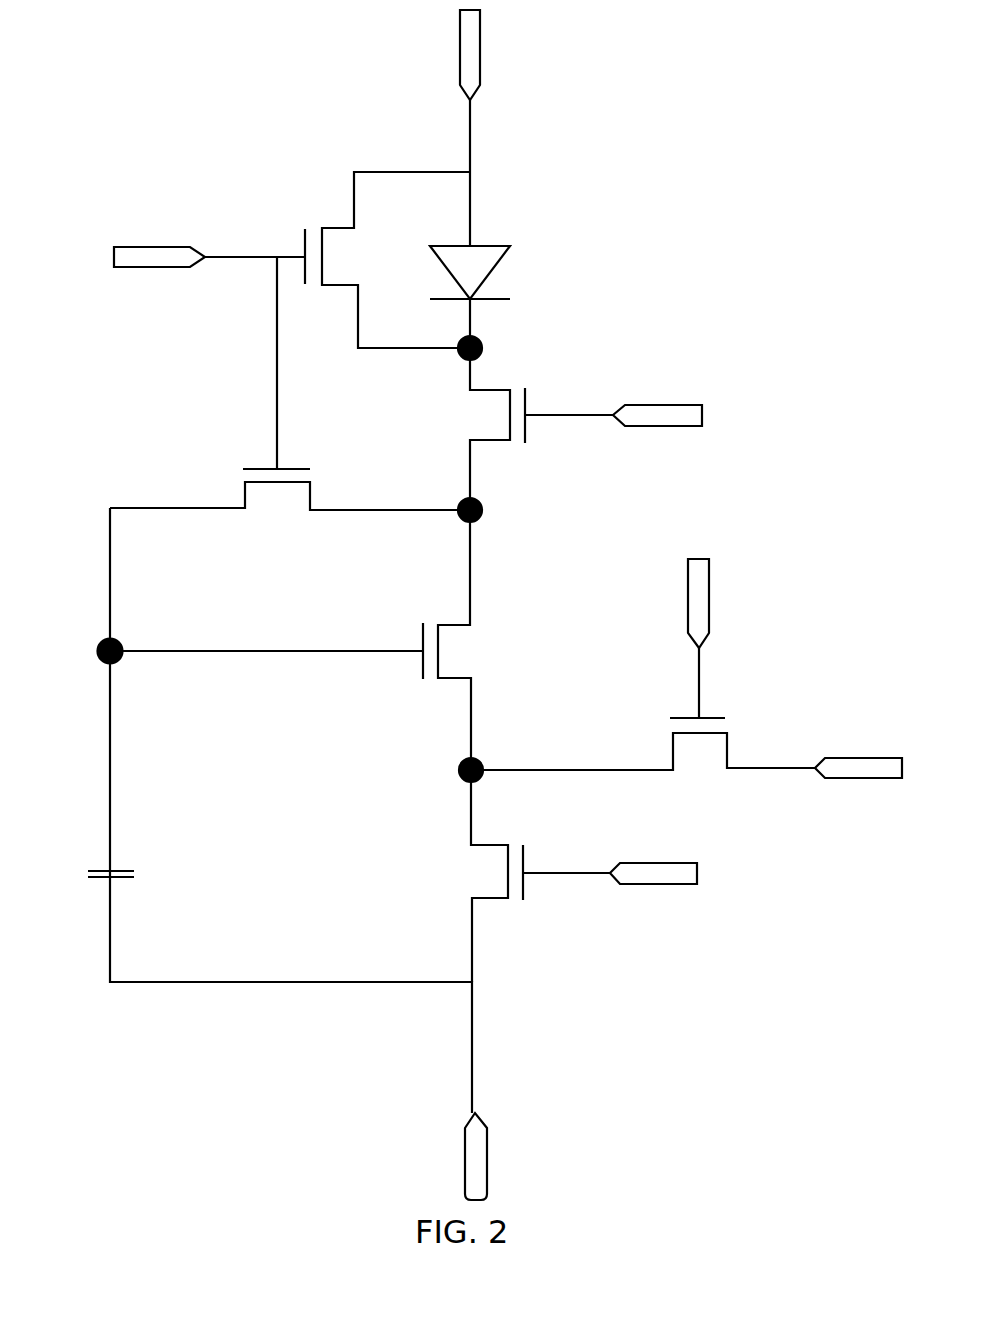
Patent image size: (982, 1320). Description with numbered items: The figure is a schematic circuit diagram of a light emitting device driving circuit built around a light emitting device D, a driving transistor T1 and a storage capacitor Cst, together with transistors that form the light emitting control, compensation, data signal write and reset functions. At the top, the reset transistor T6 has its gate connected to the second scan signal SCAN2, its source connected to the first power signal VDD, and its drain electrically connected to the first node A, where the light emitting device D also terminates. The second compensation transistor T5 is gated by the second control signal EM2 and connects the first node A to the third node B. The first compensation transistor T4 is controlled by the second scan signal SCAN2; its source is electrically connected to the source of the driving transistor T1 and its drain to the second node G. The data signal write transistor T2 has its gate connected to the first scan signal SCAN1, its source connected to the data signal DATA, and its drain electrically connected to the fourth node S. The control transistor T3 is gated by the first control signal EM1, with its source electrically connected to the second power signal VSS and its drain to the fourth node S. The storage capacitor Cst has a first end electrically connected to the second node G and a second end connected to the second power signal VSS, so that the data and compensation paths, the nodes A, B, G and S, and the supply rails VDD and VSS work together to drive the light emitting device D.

The first power signal VDD is at (506, 55).
The second power signal VSS is at (505, 1156).
The first scan signal SCAN1 is at (702, 615).
The second scan signal SCAN2 is at (208, 233).
The first control signal EM1 is at (610, 902).
The second control signal EM2 is at (613, 396).
The data signal DATA is at (858, 747).
The driving transistor T1 is at (312, 640).
The data signal write transistor T2 is at (643, 763).
The control transistor T3 is at (482, 876).
The first compensation transistor T4 is at (290, 403).
The second compensation transistor T5 is at (472, 429).
The reset transistor T6 is at (387, 260).
The light emitting device D is at (486, 272).
The storage capacitor Cst is at (77, 876).
The first node A is at (482, 348).
The third node B is at (482, 510).
The second node G is at (98, 640).
The fourth node S is at (466, 760).